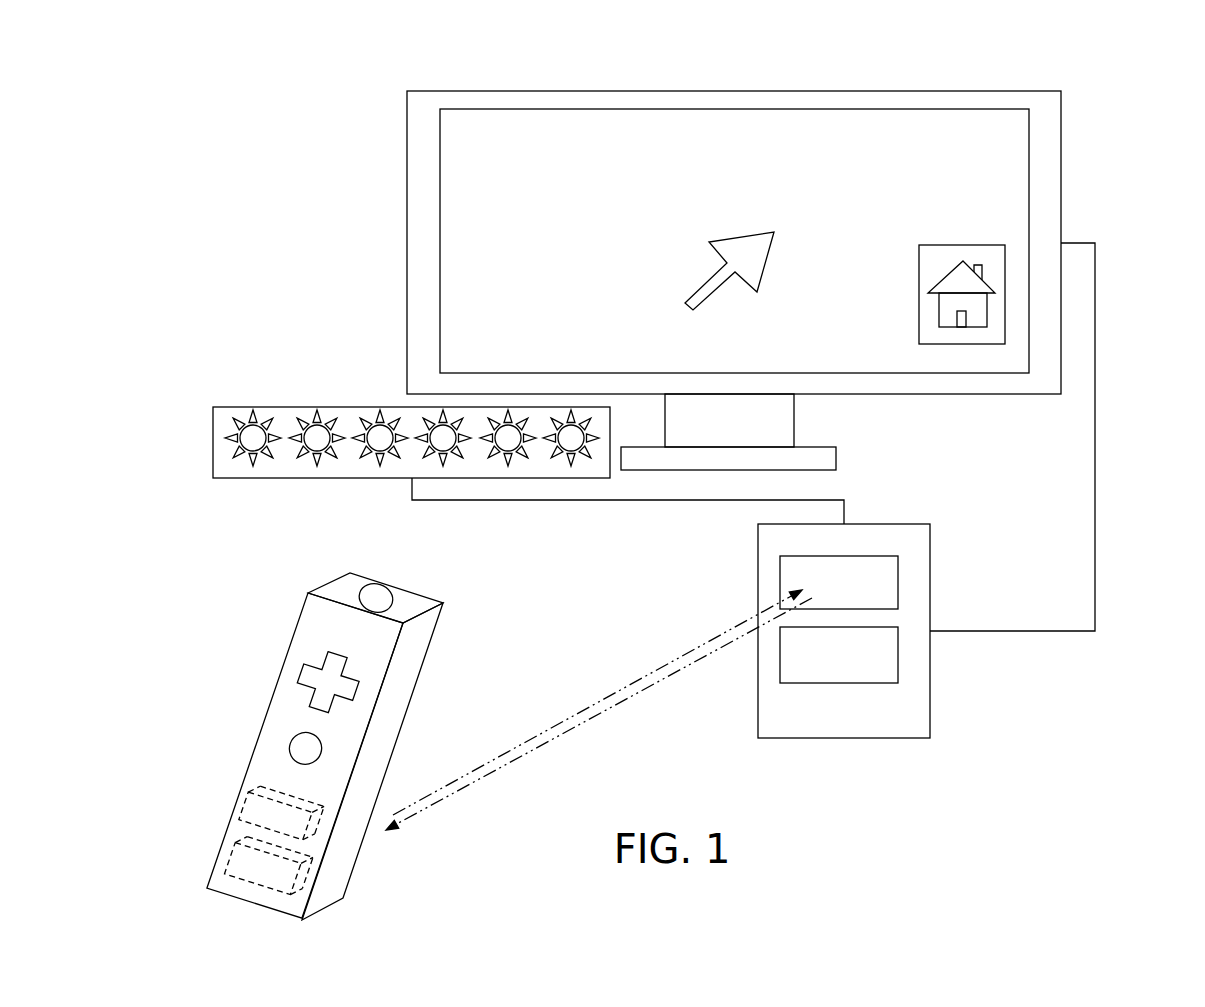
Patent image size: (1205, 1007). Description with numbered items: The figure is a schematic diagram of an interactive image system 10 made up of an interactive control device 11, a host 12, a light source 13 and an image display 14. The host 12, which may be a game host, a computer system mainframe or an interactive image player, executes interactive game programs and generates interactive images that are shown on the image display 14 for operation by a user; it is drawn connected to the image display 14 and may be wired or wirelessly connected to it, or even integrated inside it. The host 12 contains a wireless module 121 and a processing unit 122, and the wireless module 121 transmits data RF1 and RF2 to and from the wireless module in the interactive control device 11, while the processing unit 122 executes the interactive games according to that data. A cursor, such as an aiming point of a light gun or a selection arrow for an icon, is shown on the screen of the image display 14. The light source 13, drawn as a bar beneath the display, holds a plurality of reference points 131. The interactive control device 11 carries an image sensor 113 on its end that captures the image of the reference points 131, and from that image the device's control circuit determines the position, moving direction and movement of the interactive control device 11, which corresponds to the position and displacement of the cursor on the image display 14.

The interactive image system 10 is at (1017, 743).
The interactive control device 11 is at (278, 724).
The image sensor 113 is at (362, 597).
The host 12 is at (844, 631).
The wireless module 121 is at (814, 601).
The processing unit 122 is at (814, 673).
The light source 13 is at (360, 379).
The reference points 131 is at (300, 423).
The image display 14 is at (407, 285).
The data RF1 is at (597, 702).
The data RF2 is at (599, 714).